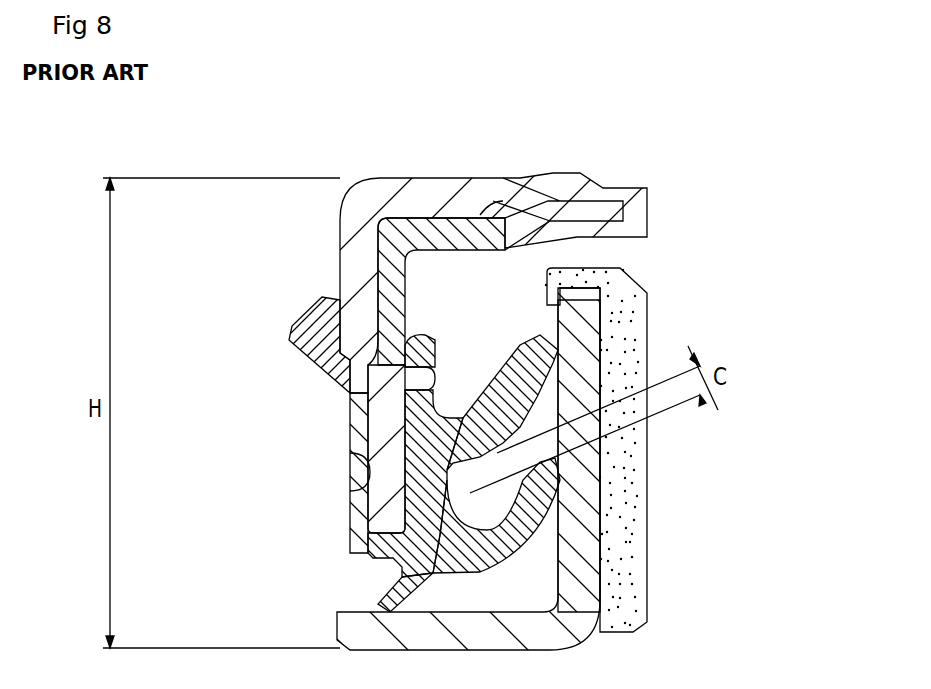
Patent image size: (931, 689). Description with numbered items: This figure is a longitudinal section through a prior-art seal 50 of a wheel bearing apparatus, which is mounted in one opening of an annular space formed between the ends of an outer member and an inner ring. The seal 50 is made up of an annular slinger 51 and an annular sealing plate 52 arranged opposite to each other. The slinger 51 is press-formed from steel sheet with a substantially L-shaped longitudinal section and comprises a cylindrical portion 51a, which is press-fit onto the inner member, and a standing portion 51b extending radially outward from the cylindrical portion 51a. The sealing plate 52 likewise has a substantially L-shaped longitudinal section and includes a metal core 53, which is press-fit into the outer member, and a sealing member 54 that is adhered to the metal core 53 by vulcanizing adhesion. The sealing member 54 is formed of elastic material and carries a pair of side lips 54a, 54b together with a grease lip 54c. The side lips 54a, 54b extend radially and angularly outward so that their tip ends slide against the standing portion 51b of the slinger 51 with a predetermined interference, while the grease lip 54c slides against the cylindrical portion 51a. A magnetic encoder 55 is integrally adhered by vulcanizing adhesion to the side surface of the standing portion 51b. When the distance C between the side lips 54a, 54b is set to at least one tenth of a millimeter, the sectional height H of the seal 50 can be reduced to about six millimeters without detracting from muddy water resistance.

The seal 50 is at (277, 307).
The slinger 51 is at (730, 527).
The cylindrical portion 51a is at (478, 622).
The standing portion 51b is at (590, 528).
The sealing plate 52 is at (197, 415).
The metal core 53 is at (383, 410).
The sealing member 54 is at (257, 462).
The side lip 54a is at (523, 363).
The side lip 54b is at (470, 493).
The grease lip 54c is at (378, 598).
The magnetic encoder 55 is at (632, 492).